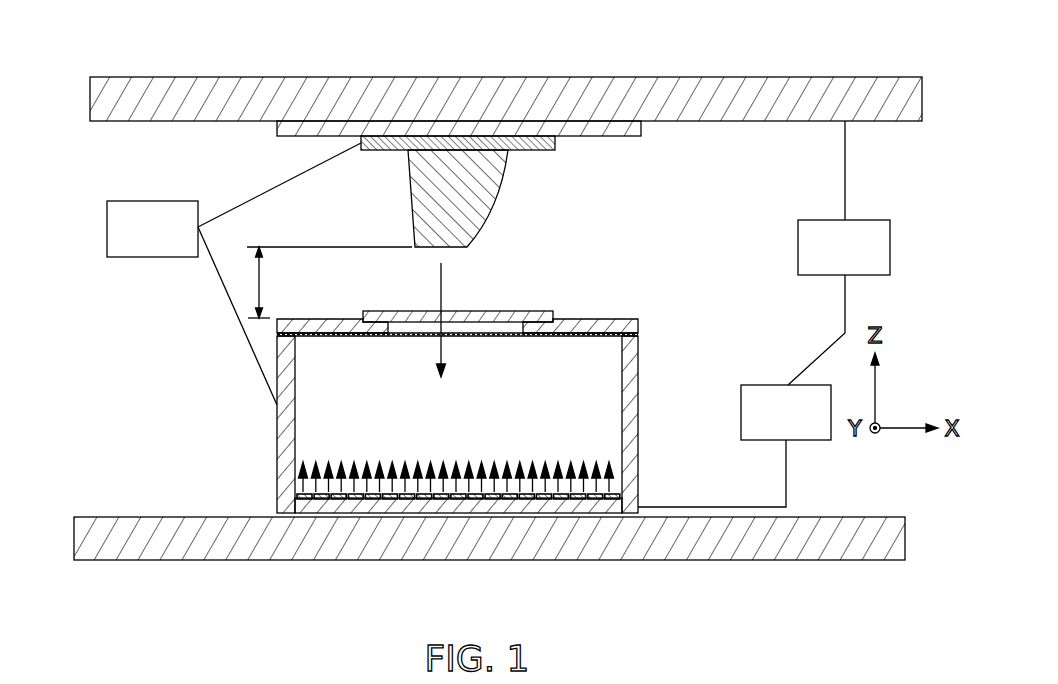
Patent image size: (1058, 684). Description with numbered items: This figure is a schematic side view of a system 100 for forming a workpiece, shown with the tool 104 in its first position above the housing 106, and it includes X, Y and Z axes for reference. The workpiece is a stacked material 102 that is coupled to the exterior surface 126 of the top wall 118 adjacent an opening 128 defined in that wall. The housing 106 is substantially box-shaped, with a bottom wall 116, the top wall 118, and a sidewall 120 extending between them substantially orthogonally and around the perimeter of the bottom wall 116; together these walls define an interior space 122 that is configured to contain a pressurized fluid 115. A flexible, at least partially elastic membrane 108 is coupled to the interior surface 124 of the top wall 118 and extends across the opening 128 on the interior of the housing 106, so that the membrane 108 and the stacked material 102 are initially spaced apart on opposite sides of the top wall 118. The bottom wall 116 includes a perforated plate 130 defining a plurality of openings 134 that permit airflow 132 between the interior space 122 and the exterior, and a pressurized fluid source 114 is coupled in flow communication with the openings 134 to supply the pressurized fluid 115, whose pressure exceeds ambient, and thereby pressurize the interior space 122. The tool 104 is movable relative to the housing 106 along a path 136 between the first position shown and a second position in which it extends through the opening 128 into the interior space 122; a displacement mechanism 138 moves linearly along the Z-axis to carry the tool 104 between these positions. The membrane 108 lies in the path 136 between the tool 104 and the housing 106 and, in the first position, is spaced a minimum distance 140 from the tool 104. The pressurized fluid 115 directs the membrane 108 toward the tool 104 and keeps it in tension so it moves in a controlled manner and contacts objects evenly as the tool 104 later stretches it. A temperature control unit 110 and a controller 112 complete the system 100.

The system 100 is at (124, 39).
The stacked material 102 is at (528, 311).
The tool 104 is at (435, 197).
The housing 106 is at (449, 439).
The membrane 108 is at (332, 337).
The temperature control unit 110 is at (234, 274).
The controller 112 is at (839, 253).
The pressurized fluid source 114 is at (786, 412).
The pressurized fluid 115 is at (786, 473).
The bottom wall 116 is at (370, 508).
The top wall 118 is at (618, 319).
The sidewall 120 is at (278, 423).
The interior space 122 is at (548, 440).
The interior surface 124 is at (551, 336).
The exterior surface 126 is at (313, 318).
The opening 128 is at (523, 331).
The perforated plate 130 is at (307, 492).
The airflow 132 is at (487, 462).
The openings 134 is at (568, 500).
The path 136 is at (441, 290).
The displacement mechanism 138 is at (580, 136).
The minimum distance 140 is at (259, 283).